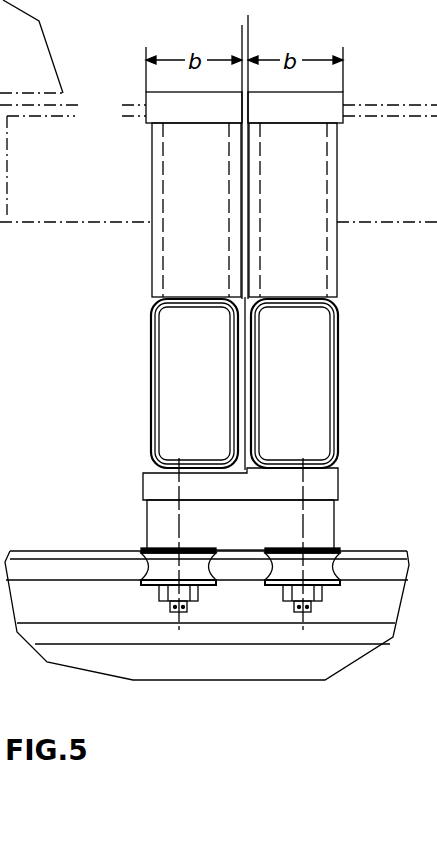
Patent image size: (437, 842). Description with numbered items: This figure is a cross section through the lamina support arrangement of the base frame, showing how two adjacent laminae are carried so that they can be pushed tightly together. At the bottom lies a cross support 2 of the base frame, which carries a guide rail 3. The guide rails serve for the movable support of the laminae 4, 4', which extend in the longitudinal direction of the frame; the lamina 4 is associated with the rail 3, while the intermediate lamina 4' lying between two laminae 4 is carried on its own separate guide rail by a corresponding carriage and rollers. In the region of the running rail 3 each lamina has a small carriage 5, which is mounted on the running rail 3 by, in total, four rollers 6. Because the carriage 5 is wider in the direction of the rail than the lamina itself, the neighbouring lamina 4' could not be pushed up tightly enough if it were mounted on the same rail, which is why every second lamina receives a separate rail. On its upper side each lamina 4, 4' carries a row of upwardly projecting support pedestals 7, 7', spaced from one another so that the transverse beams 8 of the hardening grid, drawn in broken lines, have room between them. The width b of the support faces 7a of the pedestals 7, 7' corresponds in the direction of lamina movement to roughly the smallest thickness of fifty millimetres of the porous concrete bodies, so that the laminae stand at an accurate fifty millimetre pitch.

The support face 7a is at (165, 93).
The transverse beam 8 is at (73, 118).
The support pedestal 7 is at (315, 210).
The support pedestal 7' is at (175, 213).
The lamina 4' is at (158, 383).
The lamina 4 is at (313, 383).
The carriage 5 is at (323, 515).
The roller 6 is at (295, 565).
The guide rail 3 is at (67, 567).
The cross support 2 is at (315, 672).